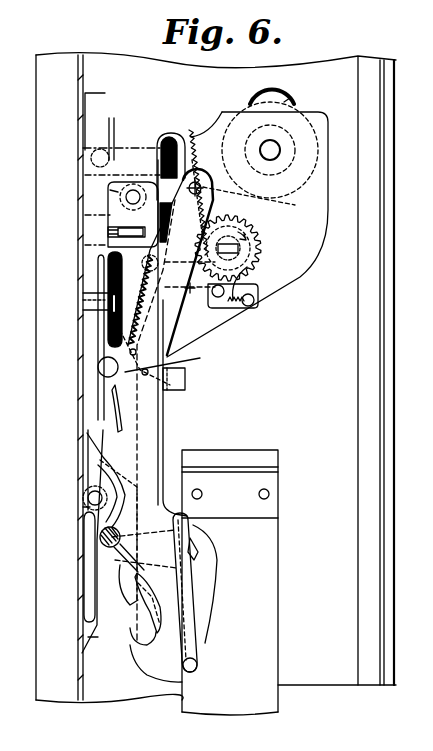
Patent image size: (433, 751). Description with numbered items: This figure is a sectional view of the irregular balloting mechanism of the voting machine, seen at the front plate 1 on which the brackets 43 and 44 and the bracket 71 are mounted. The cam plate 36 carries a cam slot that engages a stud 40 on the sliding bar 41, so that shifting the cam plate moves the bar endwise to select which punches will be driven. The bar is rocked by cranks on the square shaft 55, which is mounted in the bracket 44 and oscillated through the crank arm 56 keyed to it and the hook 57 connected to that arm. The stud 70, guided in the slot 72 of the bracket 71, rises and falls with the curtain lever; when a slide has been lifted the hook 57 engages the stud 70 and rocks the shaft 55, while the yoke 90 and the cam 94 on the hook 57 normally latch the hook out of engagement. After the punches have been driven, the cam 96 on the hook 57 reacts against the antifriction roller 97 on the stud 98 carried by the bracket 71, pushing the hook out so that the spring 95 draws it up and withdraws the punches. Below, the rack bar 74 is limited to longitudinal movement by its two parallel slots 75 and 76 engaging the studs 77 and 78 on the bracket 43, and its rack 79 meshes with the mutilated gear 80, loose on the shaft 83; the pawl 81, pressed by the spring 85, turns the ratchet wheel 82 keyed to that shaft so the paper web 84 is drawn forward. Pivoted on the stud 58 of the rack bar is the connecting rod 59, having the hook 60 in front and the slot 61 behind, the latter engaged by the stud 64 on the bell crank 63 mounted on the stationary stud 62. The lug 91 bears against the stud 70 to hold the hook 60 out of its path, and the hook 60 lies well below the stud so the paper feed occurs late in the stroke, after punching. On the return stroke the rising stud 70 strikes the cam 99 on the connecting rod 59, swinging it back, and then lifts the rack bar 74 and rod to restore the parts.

The front plate 1 is at (80, 668).
The cam plate 36 is at (113, 105).
The stud 40 is at (108, 233).
The sliding bar 41 is at (130, 225).
The bracket 43 is at (288, 270).
The bracket 44 is at (120, 190).
The square shaft 55 is at (110, 193).
The crank arm 56 is at (163, 187).
The hook 57 is at (148, 423).
The stud 58 is at (144, 299).
The connecting rod 59 is at (138, 663).
The hook 60 is at (130, 637).
The slot 61 is at (183, 621).
The stationary stud 62 is at (198, 552).
The bell crank 63 is at (205, 563).
The stud 64 is at (197, 667).
The stud 70 is at (105, 539).
The bracket 71 is at (90, 452).
The slot 72 is at (100, 573).
The rack bar 74 is at (105, 410).
The slot 75 is at (120, 340).
The slot 76 is at (166, 140).
The stud 77 is at (171, 357).
The stud 78 is at (187, 248).
The rack 79 is at (193, 158).
The mutilated gear 80 is at (258, 250).
The pawl 81 is at (255, 302).
The ratchet wheel 82 is at (250, 265).
The shaft 83 is at (224, 246).
The paper web 84 is at (171, 410).
The spring 85 is at (236, 309).
The yoke 90 is at (186, 383).
The lug 91 is at (110, 550).
The cam 94 is at (119, 585).
The spring 95 is at (98, 324).
The cam 96 is at (92, 478).
The antifriction roller 97 is at (86, 510).
The stud 98 is at (84, 497).
The cam 99 is at (140, 606).